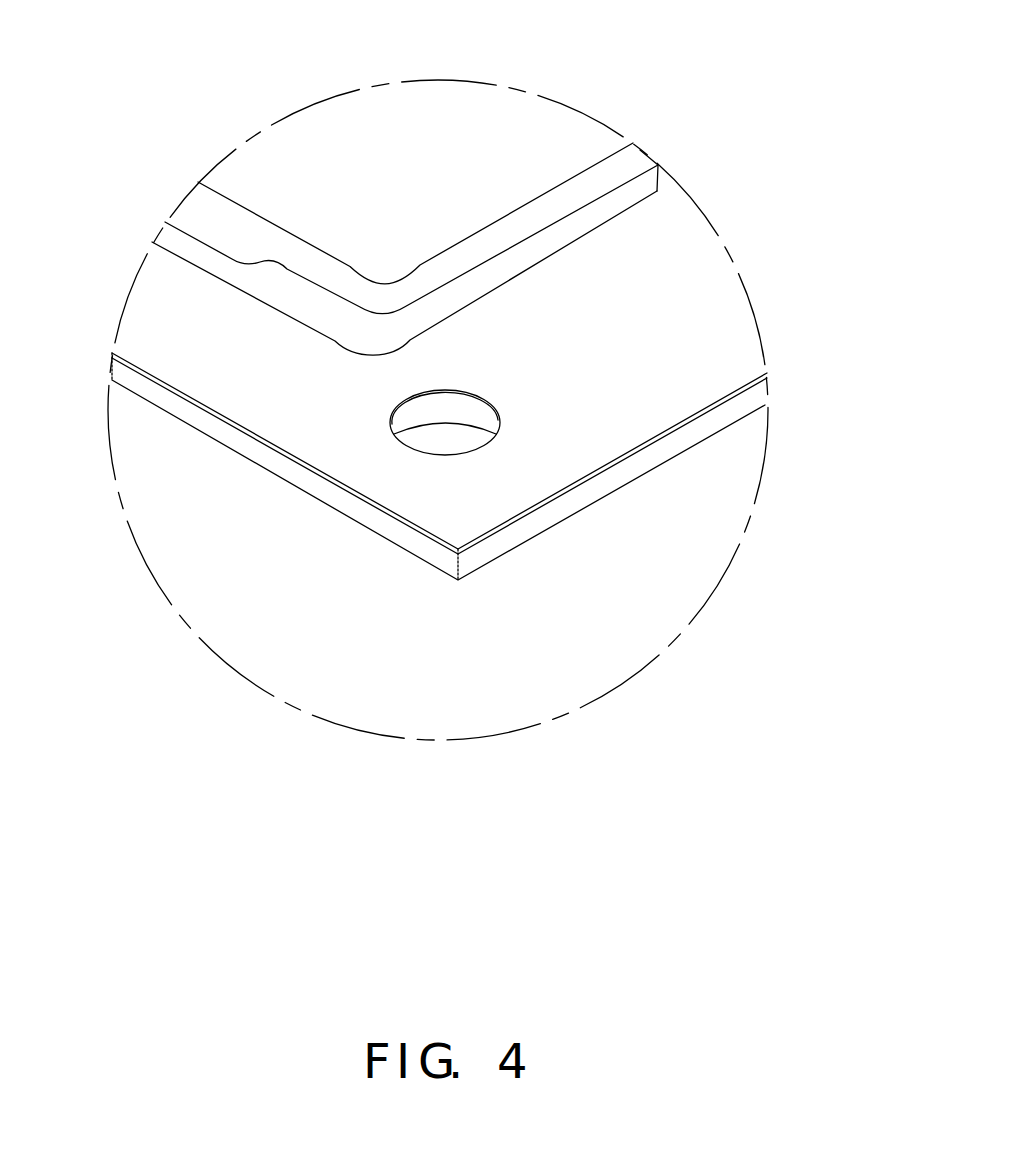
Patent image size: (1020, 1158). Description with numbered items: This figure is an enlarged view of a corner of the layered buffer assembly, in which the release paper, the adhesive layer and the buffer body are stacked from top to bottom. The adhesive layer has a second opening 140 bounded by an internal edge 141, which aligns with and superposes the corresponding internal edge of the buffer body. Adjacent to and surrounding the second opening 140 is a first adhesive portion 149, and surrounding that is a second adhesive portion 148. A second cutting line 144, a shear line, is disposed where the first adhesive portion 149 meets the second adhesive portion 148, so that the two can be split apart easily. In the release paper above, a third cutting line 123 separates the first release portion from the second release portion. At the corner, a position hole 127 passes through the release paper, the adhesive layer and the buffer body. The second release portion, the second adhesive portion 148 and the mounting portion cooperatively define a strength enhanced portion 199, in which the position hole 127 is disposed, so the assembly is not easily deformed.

The second opening 140 is at (353, 118).
The internal edge 141 is at (583, 170).
The first adhesive portion 149 is at (607, 181).
The second adhesive portion 148 is at (660, 176).
The second cutting line 144 is at (622, 184).
The third cutting line 123 is at (624, 213).
The position holes 127 is at (443, 439).
The strength enhanced portion 199 is at (410, 193).